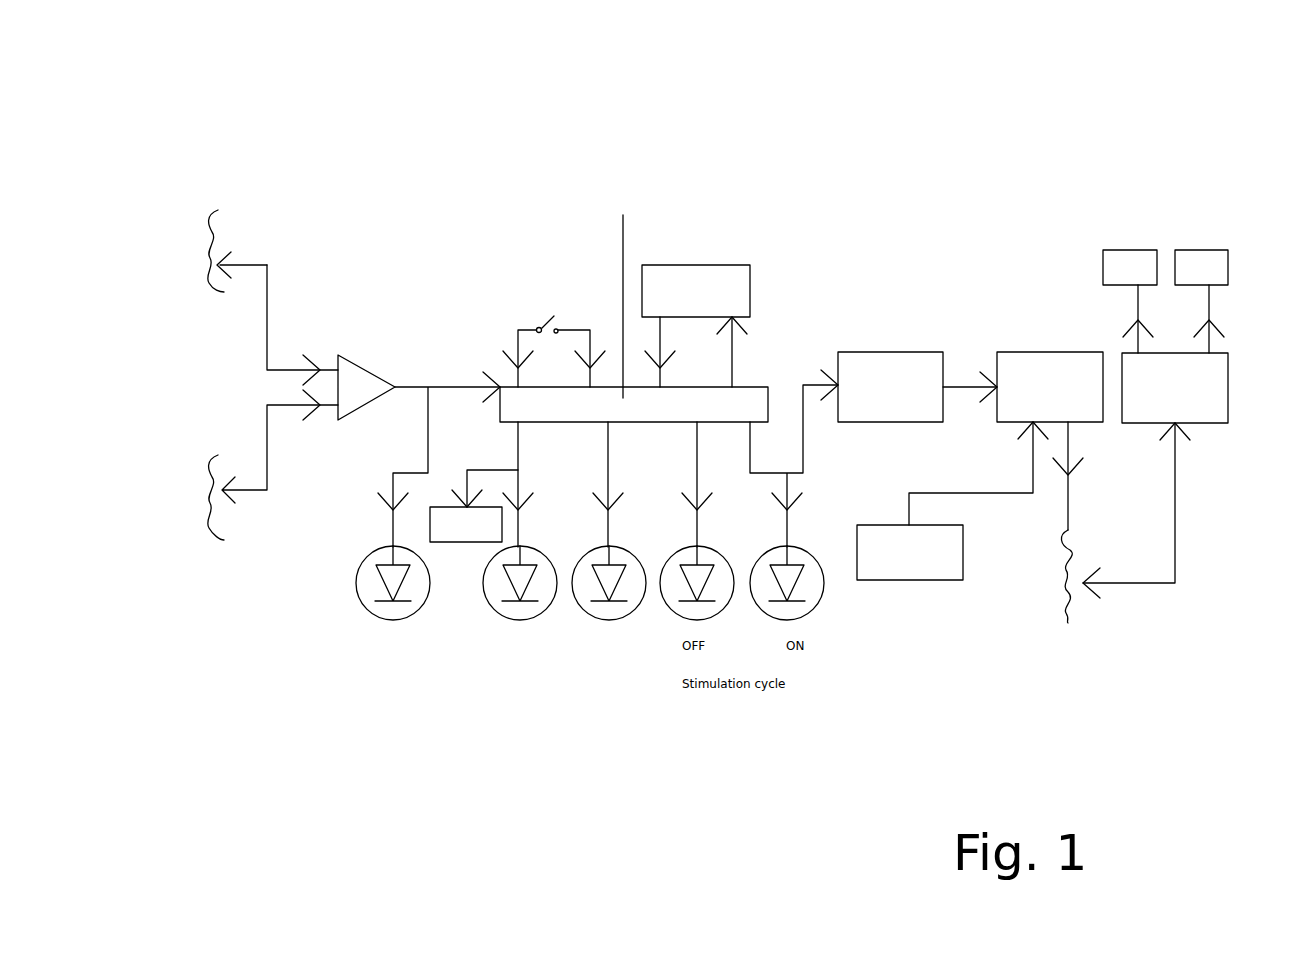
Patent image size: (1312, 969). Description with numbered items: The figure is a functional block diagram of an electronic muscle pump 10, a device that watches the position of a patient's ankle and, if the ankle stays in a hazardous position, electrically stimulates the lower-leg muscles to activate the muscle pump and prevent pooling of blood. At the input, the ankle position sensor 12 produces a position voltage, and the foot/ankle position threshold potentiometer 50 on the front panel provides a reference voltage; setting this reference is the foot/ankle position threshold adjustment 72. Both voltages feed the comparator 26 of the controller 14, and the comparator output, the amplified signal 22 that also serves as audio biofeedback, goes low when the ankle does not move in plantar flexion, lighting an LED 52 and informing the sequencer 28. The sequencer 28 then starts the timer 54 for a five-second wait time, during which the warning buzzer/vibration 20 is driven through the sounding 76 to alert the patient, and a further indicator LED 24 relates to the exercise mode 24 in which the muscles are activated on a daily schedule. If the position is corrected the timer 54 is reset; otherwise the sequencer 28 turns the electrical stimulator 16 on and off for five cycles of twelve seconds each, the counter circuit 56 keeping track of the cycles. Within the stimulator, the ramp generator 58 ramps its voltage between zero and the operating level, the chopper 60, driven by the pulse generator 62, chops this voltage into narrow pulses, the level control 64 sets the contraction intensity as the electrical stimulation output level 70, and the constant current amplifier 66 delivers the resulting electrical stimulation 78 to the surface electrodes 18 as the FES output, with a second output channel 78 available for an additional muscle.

The electronic muscle pump 10 is at (912, 92).
The position sensor 12 is at (219, 222).
The controller 14 is at (824, 240).
The electrical stimulator 16 is at (994, 262).
The surface electrodes 18 is at (1143, 255).
The warning buzzer/vibration 20 is at (455, 548).
The audio biofeedback 22 is at (491, 447).
The exercise mode 24 is at (595, 620).
The comparator 26 is at (365, 380).
The sequencer 28 is at (607, 295).
The foot/ankle position threshold potentiometer 50 is at (205, 515).
The LED 52 is at (357, 605).
The timer 54 is at (505, 620).
The counter circuit 56 is at (700, 278).
The ramp generator 58 is at (907, 352).
The chopper 60 is at (1032, 352).
The pulse generator 62 is at (909, 580).
The level control 64 is at (1068, 583).
The constant current amplifier 66 is at (1212, 392).
The electrical stimulation output level 70 is at (1137, 590).
The foot/ankle position threshold adjustment 72 is at (255, 497).
The sounding of warning buzzer 76 is at (463, 484).
The electrical stimulation 78 is at (1212, 307).